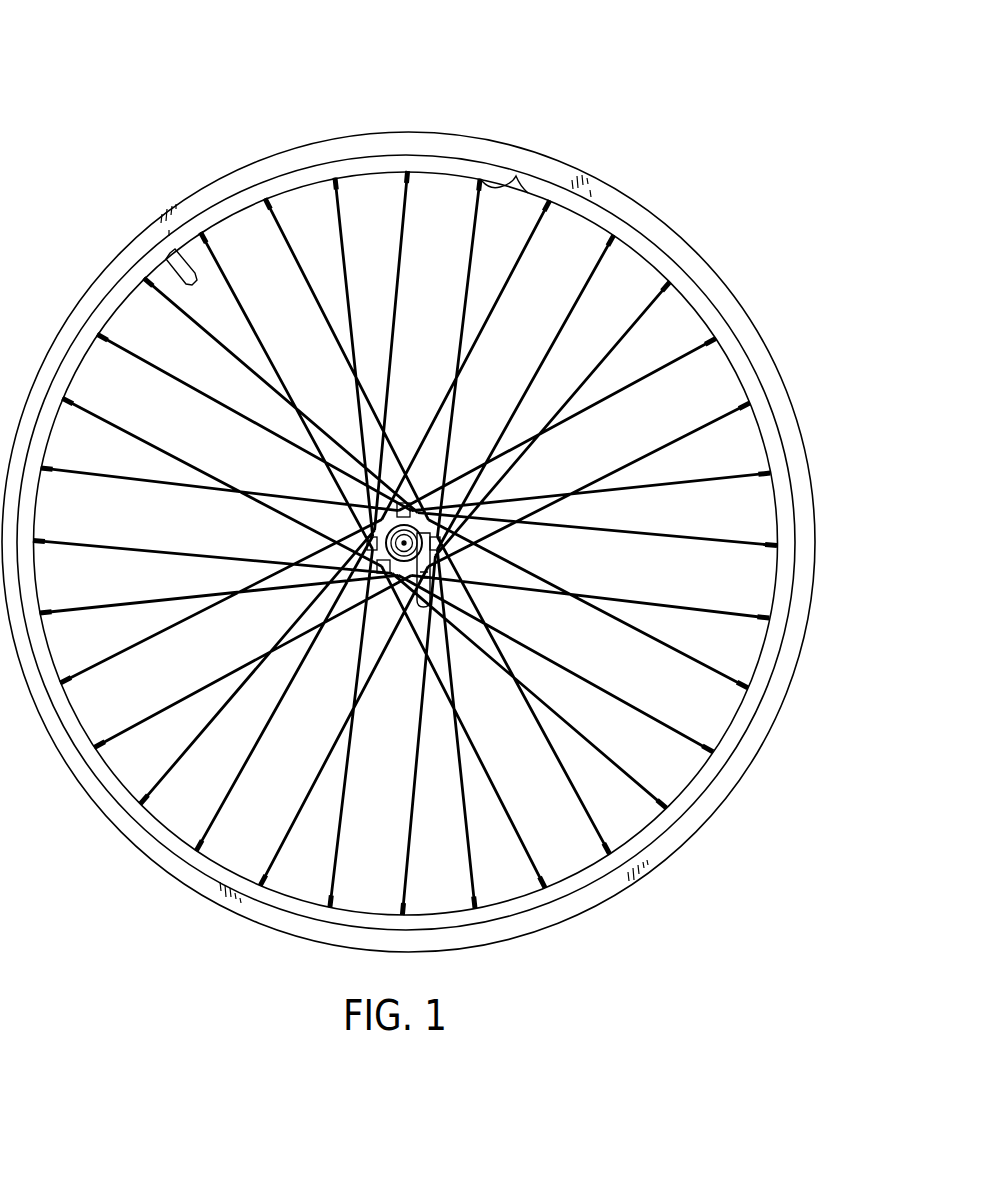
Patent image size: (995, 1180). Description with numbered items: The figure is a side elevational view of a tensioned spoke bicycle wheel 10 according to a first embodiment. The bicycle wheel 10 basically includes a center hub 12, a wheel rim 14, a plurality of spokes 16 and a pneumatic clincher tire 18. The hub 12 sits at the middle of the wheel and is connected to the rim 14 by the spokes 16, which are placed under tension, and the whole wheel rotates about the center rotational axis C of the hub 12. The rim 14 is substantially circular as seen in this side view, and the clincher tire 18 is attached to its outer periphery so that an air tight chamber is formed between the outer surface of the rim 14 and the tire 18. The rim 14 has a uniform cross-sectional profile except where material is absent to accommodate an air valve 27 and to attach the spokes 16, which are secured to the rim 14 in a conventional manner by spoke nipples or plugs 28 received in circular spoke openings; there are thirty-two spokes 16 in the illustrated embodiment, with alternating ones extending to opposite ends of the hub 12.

The tensioned spoke bicycle wheel 10 is at (408, 489).
The center hub 12 is at (455, 549).
The wheel rim 14 is at (440, 176).
The spokes 16 is at (518, 258).
The pneumatic clincher tire 18 is at (362, 132).
The air valve 27 is at (172, 264).
The spoke nipples or plugs 28 is at (518, 177).
The center rotational axis C is at (383, 577).